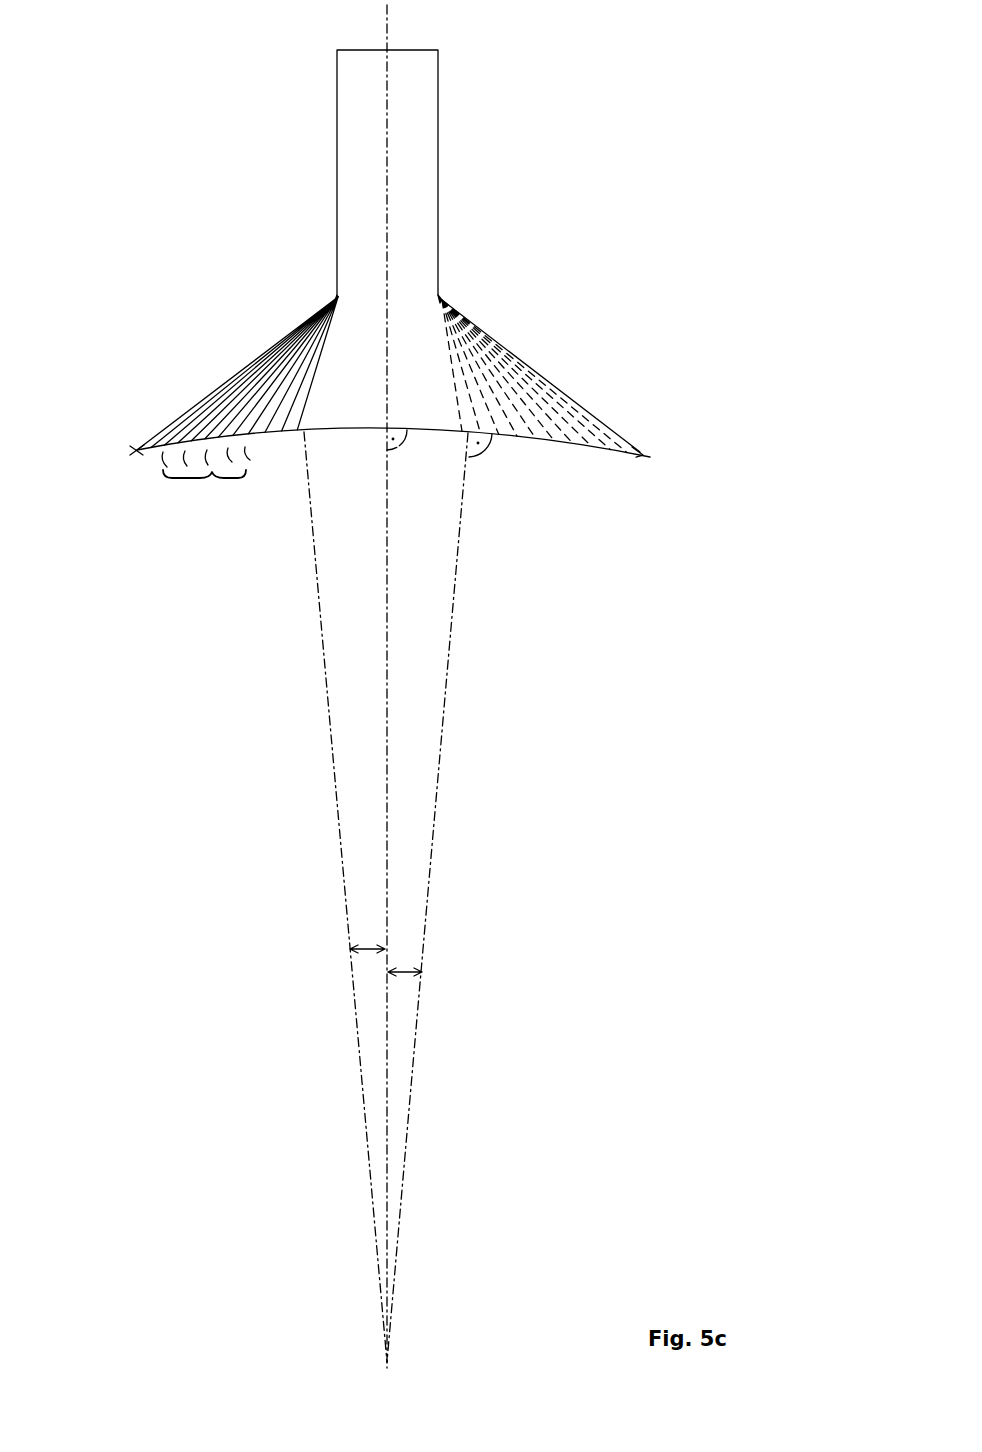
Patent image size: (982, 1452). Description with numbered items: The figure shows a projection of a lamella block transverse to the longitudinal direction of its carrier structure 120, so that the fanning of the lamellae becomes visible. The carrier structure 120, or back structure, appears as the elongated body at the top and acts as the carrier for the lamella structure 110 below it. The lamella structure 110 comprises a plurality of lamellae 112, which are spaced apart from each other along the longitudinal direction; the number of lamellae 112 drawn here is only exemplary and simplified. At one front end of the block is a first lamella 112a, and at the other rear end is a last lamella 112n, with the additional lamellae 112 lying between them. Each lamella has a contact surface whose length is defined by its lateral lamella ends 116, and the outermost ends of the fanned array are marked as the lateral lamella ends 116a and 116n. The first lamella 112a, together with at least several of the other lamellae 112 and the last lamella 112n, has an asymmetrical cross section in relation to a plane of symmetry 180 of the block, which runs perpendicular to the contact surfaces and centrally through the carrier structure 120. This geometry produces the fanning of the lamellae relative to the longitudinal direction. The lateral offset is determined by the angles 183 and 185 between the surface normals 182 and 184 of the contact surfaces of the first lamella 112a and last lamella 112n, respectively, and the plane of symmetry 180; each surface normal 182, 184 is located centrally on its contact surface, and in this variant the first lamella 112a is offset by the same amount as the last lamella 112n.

The lamella structure 110 is at (627, 397).
The lamellae 112 is at (206, 476).
The first lamella 112a is at (428, 314).
The last lamella 112n is at (137, 452).
The lateral lamella ends 116 is at (522, 437).
The lateral lamella end 116a is at (643, 455).
The lateral lamella end 116n is at (137, 450).
The carrier structure 120 is at (428, 131).
The plane of symmetry 180 is at (388, 18).
The surface normal 182 is at (452, 650).
The angle 183 is at (400, 971).
The surface normal 184 is at (328, 690).
The angle 185 is at (365, 948).